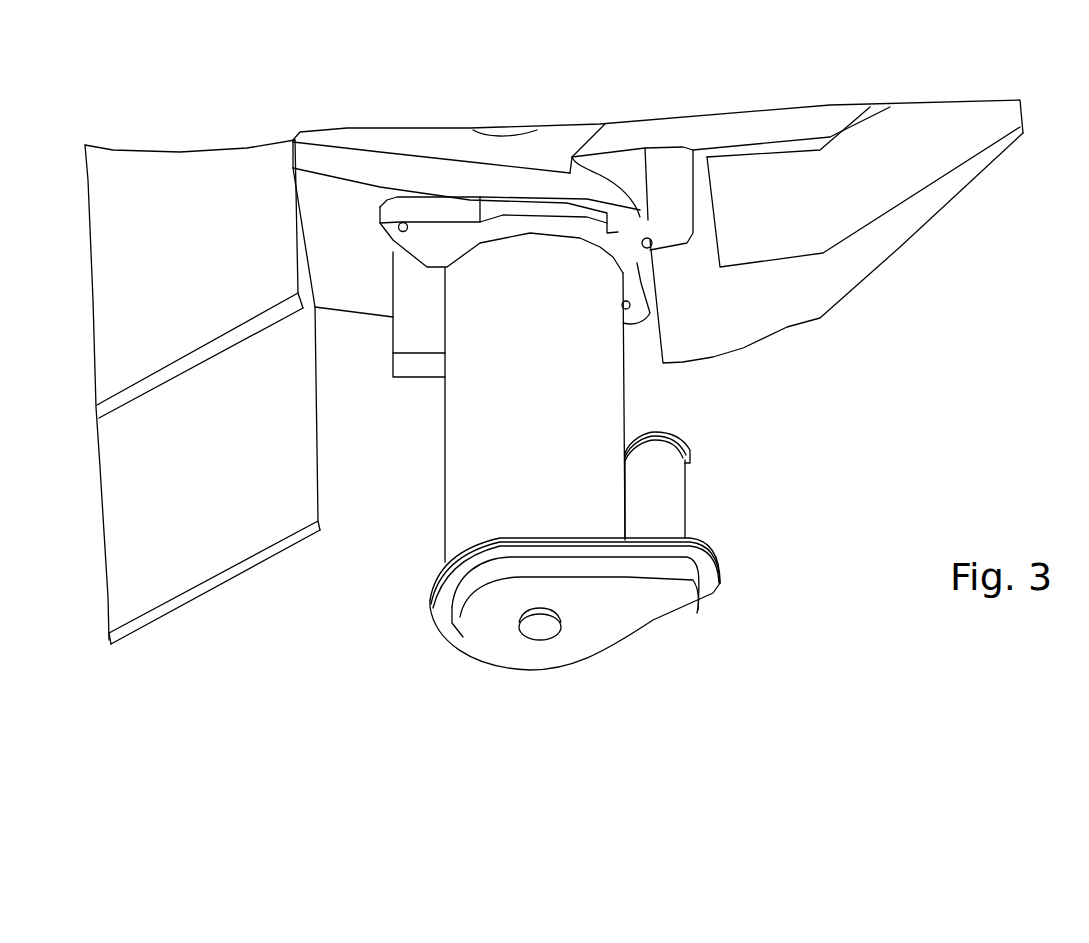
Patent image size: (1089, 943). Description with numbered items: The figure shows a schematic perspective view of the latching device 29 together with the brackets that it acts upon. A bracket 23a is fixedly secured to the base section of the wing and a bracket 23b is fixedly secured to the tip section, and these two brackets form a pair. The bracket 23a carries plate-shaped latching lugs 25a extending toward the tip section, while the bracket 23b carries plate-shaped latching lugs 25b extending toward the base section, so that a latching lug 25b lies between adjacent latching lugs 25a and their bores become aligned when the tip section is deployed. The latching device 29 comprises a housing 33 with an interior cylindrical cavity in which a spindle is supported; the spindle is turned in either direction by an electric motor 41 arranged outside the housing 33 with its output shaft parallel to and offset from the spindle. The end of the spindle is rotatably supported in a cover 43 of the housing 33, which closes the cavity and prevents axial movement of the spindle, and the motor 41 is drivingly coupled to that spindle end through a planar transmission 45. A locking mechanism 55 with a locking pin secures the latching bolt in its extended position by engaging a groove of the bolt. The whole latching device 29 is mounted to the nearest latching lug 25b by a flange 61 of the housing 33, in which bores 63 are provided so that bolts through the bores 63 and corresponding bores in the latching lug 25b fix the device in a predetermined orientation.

The bracket 23a is at (962, 127).
The bracket 23b is at (203, 185).
The latching lug 25a is at (613, 128).
The latching lug 25b is at (363, 200).
The latching device 29 is at (742, 665).
The housing 33 is at (467, 488).
The electric motor 41 is at (670, 478).
The cover 43 is at (720, 545).
The planar transmission 45 is at (613, 570).
The locking mechanism 55 is at (413, 337).
The flange 61 is at (438, 227).
The bores 63 is at (403, 222).